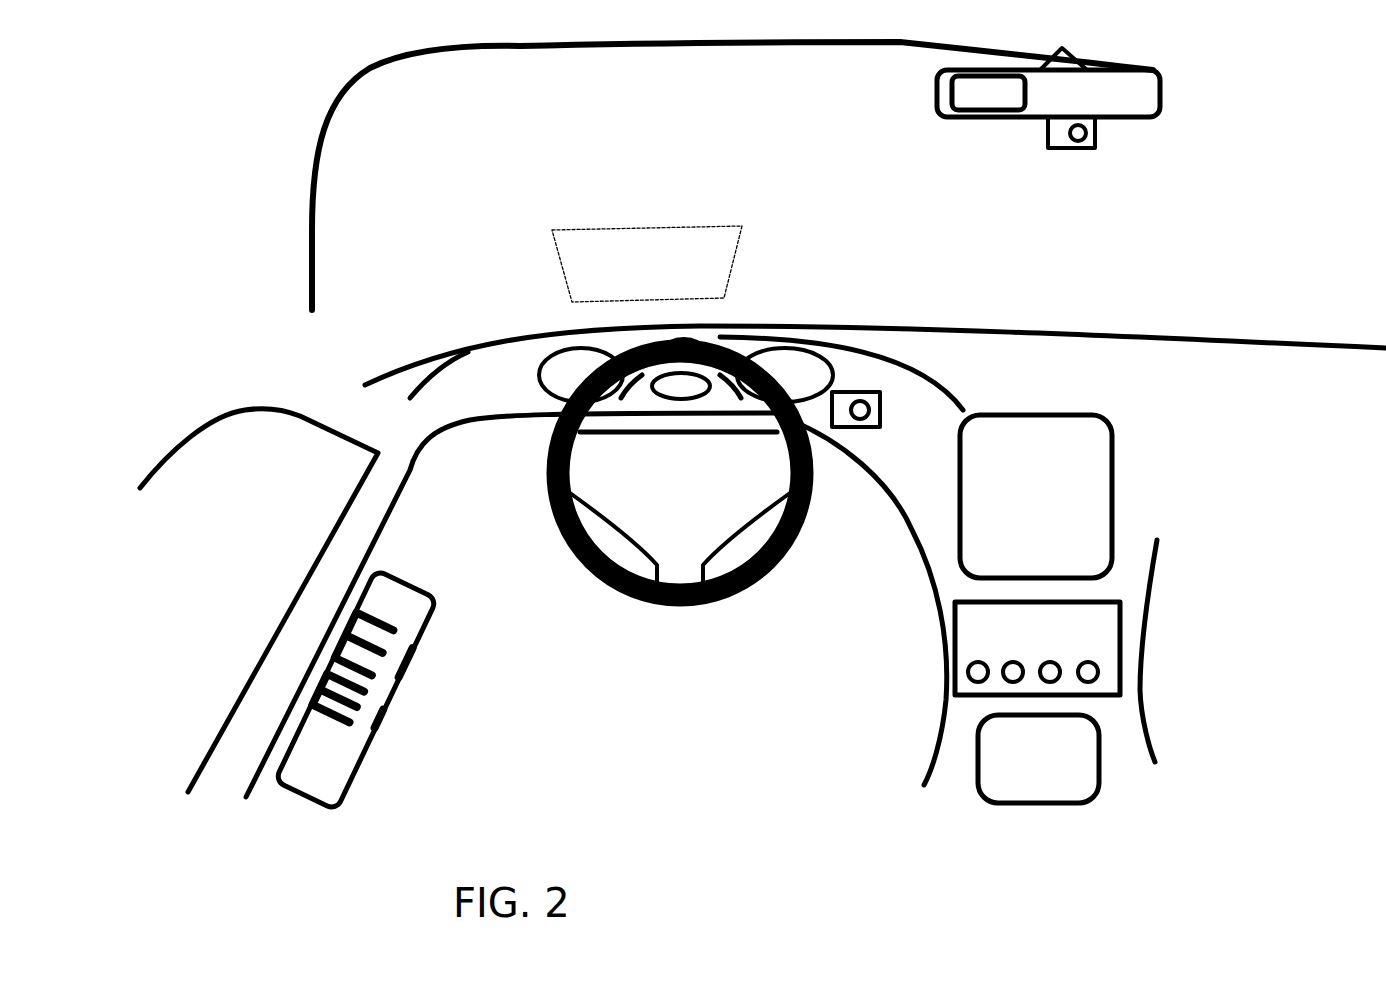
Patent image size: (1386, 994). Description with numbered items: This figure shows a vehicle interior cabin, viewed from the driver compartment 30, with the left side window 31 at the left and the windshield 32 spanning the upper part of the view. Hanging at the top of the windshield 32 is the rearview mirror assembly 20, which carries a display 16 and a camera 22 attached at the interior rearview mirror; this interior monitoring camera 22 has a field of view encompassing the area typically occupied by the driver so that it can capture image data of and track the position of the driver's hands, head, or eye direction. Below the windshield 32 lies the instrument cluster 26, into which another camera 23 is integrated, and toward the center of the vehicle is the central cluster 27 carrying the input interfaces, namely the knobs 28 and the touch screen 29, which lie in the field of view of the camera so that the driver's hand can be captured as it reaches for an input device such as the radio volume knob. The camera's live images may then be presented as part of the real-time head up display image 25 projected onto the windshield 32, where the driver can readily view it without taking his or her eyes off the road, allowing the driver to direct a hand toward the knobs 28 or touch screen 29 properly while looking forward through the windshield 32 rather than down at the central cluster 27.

The display 16 is at (1153, 72).
The rearview mirror assembly 20 is at (1000, 85).
The camera in mirror or elsewhere 22 is at (1098, 145).
The camera disposed near the central instrument cluster 23 is at (860, 392).
The head up display image on windshield 25 is at (707, 272).
The instrument cluster 26 is at (780, 360).
The central cluster 27 is at (1197, 515).
The knobs 28 is at (1100, 670).
The touch screen 29 is at (1080, 458).
The driver compartment 30 is at (235, 218).
The left side window 31 is at (280, 455).
The windshield 32 is at (460, 157).